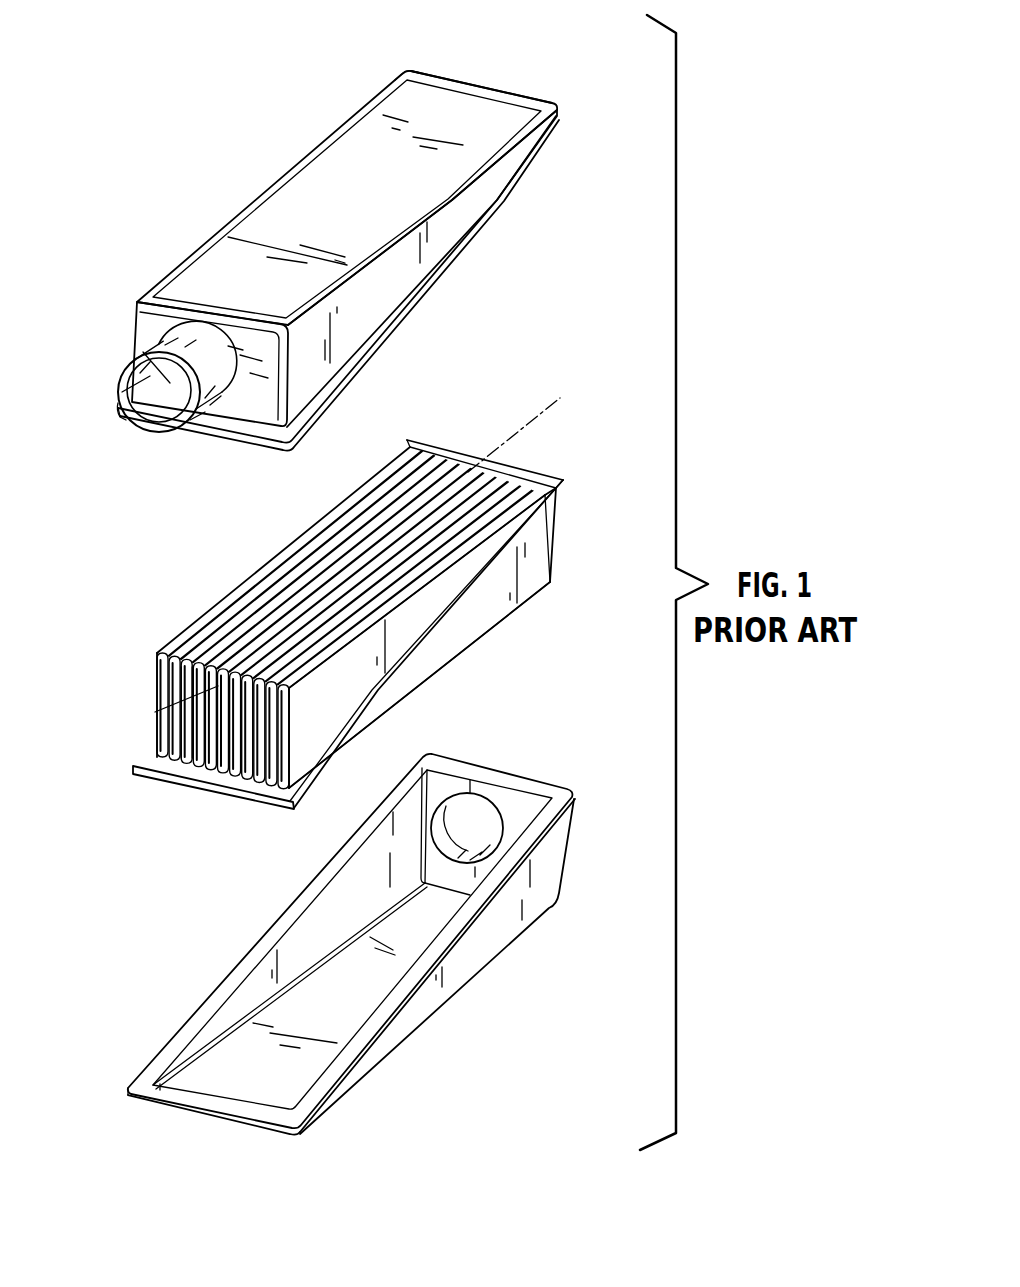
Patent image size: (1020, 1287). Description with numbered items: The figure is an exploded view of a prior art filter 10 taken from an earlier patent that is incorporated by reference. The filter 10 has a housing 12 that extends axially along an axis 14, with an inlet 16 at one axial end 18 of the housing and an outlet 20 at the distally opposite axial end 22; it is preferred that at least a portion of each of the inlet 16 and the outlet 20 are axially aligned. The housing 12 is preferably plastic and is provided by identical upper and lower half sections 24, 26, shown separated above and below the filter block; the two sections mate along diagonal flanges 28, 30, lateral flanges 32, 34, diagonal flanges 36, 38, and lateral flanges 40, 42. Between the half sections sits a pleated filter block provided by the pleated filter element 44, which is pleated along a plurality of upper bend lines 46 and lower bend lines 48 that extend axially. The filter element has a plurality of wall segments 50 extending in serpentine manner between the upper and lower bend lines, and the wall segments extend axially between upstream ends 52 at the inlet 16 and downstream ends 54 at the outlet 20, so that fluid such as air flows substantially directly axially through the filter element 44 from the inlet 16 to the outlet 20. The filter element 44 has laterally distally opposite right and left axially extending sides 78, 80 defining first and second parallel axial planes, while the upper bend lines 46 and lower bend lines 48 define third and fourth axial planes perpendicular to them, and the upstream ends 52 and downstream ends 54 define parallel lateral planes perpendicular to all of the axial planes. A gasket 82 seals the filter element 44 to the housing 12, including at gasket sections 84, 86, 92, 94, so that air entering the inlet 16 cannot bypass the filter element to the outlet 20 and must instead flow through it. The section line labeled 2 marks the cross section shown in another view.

The filter 10 is at (155, 196).
The housing 12 is at (284, 178).
The axis 14 is at (520, 427).
The inlet 16 is at (118, 389).
The axial end of the housing 18 is at (150, 322).
The outlet 20 is at (477, 807).
The distally opposite axial end of the housing 22 is at (558, 860).
The upper half section 24 is at (342, 148).
The lower half section 26 is at (448, 997).
The diagonal flange 28 is at (428, 275).
The diagonal flange 30 is at (513, 857).
The lateral flange 32 is at (483, 90).
The lateral flange 34 is at (523, 783).
The diagonal flange 36 is at (398, 80).
The diagonal flange 38 is at (253, 953).
The lateral flange 40 is at (247, 433).
The lateral flange 42 is at (220, 1105).
The pleated filter element 44 is at (275, 559).
The upper bend lines 46 is at (307, 557).
The lower bend lines 48 is at (440, 667).
The wall segments 50 is at (343, 678).
The upstream ends 52 is at (170, 708).
The downstream ends 54 is at (553, 543).
The right axially extending side 78 is at (503, 602).
The left axially extending side 80 is at (245, 582).
The gasket 82 is at (418, 657).
The gasket section 84 is at (438, 630).
The gasket section 86 is at (447, 447).
The gasket section 92 is at (403, 450).
The gasket section 94 is at (223, 778).
The section line 2 is at (468, 474).